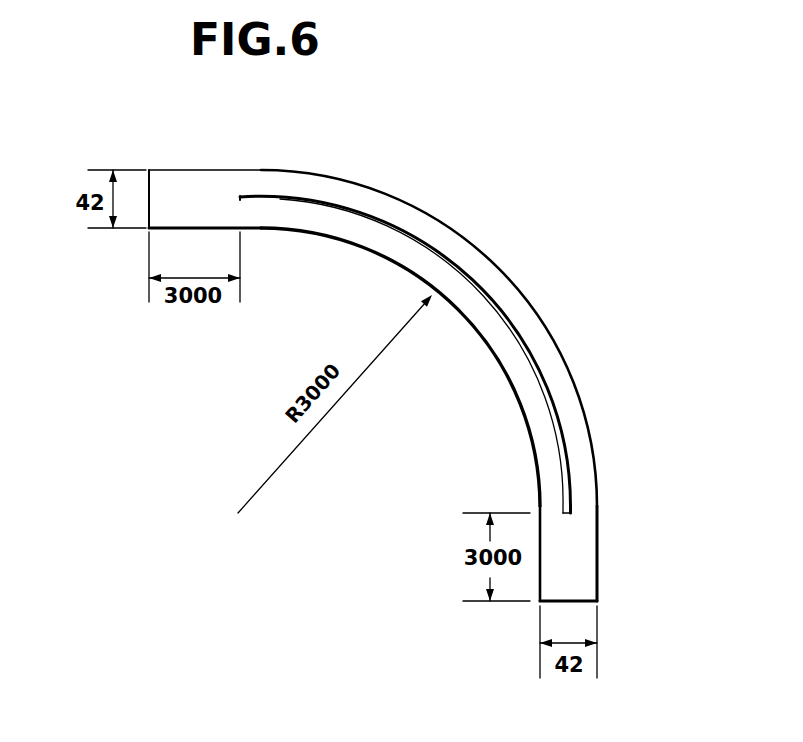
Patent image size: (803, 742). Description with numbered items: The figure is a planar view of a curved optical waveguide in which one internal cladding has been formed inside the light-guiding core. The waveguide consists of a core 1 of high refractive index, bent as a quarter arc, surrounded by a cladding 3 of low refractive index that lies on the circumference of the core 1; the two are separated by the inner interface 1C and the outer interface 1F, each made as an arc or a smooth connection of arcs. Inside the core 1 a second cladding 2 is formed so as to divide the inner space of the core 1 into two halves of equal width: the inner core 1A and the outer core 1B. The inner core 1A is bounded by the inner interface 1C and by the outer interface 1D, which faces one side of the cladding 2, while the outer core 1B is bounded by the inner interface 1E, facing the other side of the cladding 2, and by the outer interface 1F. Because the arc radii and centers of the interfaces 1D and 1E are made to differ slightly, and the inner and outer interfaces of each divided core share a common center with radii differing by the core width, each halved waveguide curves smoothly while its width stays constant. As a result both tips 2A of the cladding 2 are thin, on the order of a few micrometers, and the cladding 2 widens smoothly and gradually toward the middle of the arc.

The core 1 is at (412, 381).
The core (inner half) 1A is at (344, 381).
The core (outer half) 1B is at (403, 385).
The inner interface 1C is at (392, 262).
The outer interface of inner core half 1D is at (470, 287).
The inner interface of outer core half 1E is at (487, 298).
The outer interface 1F is at (572, 378).
The cladding (inner) 2 is at (460, 310).
The tip of cladding 2A is at (240, 197).
The cladding (outer) 3 is at (537, 430).